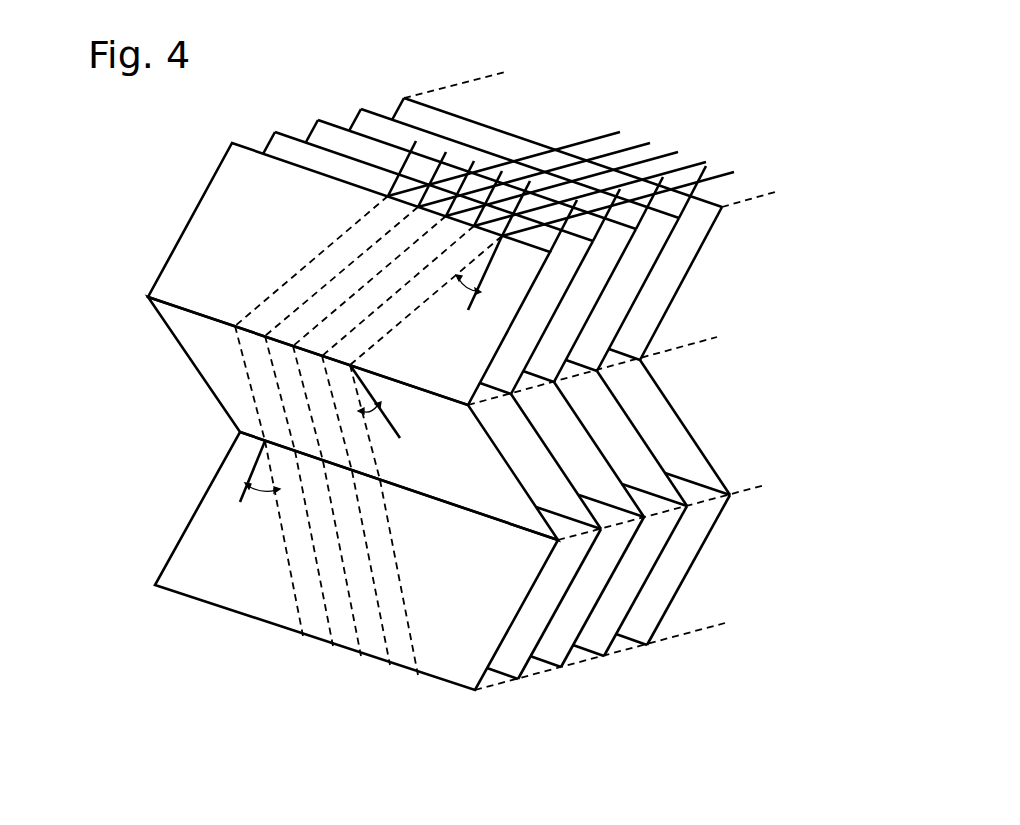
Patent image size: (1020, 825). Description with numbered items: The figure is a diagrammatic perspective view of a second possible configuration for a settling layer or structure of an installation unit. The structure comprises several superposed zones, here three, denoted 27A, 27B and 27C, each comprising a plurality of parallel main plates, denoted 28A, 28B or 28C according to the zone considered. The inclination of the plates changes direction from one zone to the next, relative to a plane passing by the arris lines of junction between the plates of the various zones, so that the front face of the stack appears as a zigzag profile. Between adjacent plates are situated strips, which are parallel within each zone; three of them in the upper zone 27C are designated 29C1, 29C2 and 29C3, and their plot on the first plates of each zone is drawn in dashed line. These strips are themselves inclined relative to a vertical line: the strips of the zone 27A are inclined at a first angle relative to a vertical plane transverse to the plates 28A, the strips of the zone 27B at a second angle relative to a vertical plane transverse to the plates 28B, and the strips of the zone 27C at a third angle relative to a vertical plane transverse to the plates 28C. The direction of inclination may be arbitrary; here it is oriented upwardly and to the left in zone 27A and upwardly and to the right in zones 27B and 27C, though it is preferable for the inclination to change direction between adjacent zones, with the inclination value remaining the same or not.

The zone 27A is at (181, 531).
The zone 27B is at (200, 352).
The zone 27C is at (191, 209).
The main plates 28A is at (617, 570).
The main plates 28B is at (594, 445).
The main plates 28C is at (244, 145).
The strip 29C1 is at (403, 183).
The strip 29C2 is at (450, 175).
The strip 29C3 is at (500, 162).